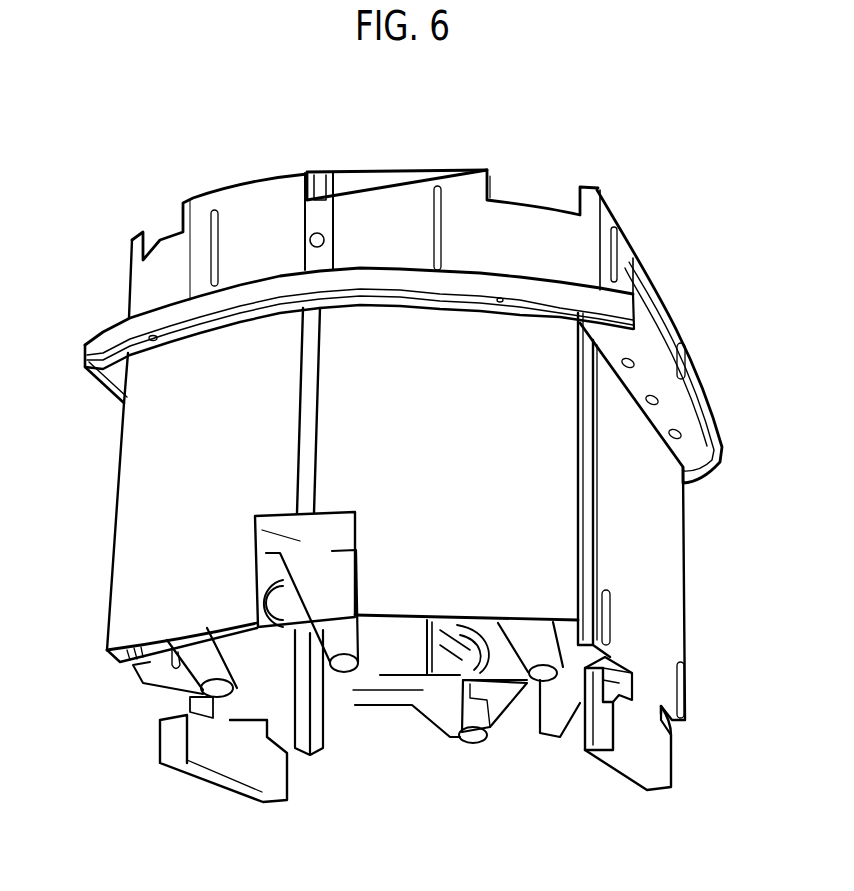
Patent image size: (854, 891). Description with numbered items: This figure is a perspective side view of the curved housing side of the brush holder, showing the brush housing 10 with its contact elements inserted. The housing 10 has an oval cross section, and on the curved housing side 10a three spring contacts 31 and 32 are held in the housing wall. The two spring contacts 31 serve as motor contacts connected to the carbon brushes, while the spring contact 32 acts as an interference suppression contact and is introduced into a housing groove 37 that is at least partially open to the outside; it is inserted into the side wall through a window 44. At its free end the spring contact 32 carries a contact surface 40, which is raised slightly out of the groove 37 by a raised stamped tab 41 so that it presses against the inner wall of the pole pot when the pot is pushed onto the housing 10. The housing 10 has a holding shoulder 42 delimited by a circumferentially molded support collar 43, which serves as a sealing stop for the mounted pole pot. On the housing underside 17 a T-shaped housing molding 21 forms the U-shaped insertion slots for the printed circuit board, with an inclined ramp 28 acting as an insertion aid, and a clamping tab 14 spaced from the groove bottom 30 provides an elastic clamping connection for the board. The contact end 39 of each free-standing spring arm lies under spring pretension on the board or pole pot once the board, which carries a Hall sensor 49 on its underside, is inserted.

The brush housing 10 is at (120, 470).
The curved housing side 10a is at (185, 417).
The clamping tab 14 is at (143, 688).
The housing underside 17 is at (115, 660).
The housing molding 21 is at (222, 783).
The inclined ramp 28 is at (680, 760).
The groove bottom 30 is at (615, 691).
The spring contact 31 is at (545, 680).
The spring contact 32 is at (303, 542).
The housing groove 37 is at (300, 353).
The contact end 39 is at (347, 672).
The contact surface 40 is at (318, 210).
The raised stamped tab 41 is at (325, 240).
The holding shoulder 42 is at (462, 190).
The support collar 43 is at (534, 292).
The window 44 is at (255, 568).
The Hall sensor 49 is at (313, 757).